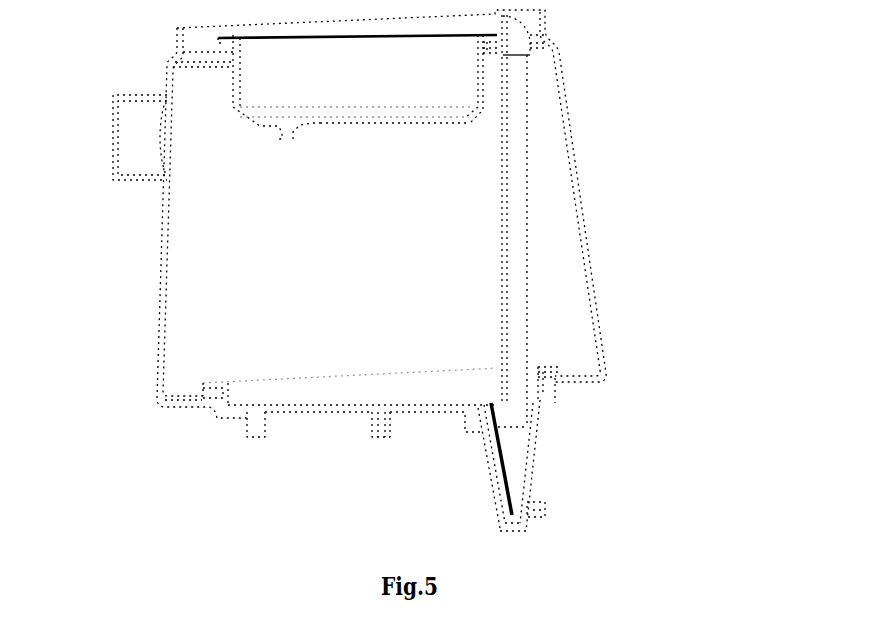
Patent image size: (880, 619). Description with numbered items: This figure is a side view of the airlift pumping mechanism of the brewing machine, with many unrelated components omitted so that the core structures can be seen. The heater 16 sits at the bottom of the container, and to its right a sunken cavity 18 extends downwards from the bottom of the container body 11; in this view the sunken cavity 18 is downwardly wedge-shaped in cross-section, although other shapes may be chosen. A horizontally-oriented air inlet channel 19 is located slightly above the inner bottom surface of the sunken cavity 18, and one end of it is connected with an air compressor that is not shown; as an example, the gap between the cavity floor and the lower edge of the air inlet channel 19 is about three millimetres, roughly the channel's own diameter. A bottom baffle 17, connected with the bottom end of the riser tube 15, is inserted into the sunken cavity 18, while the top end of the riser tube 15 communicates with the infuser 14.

The container body 11 is at (160, 262).
The infuser 14 is at (465, 93).
The riser tube 15 is at (517, 149).
The heater 16 is at (217, 416).
The bottom baffle 17 is at (505, 472).
The sunken cavity 18 is at (537, 427).
The air inlet channel 19 is at (545, 510).